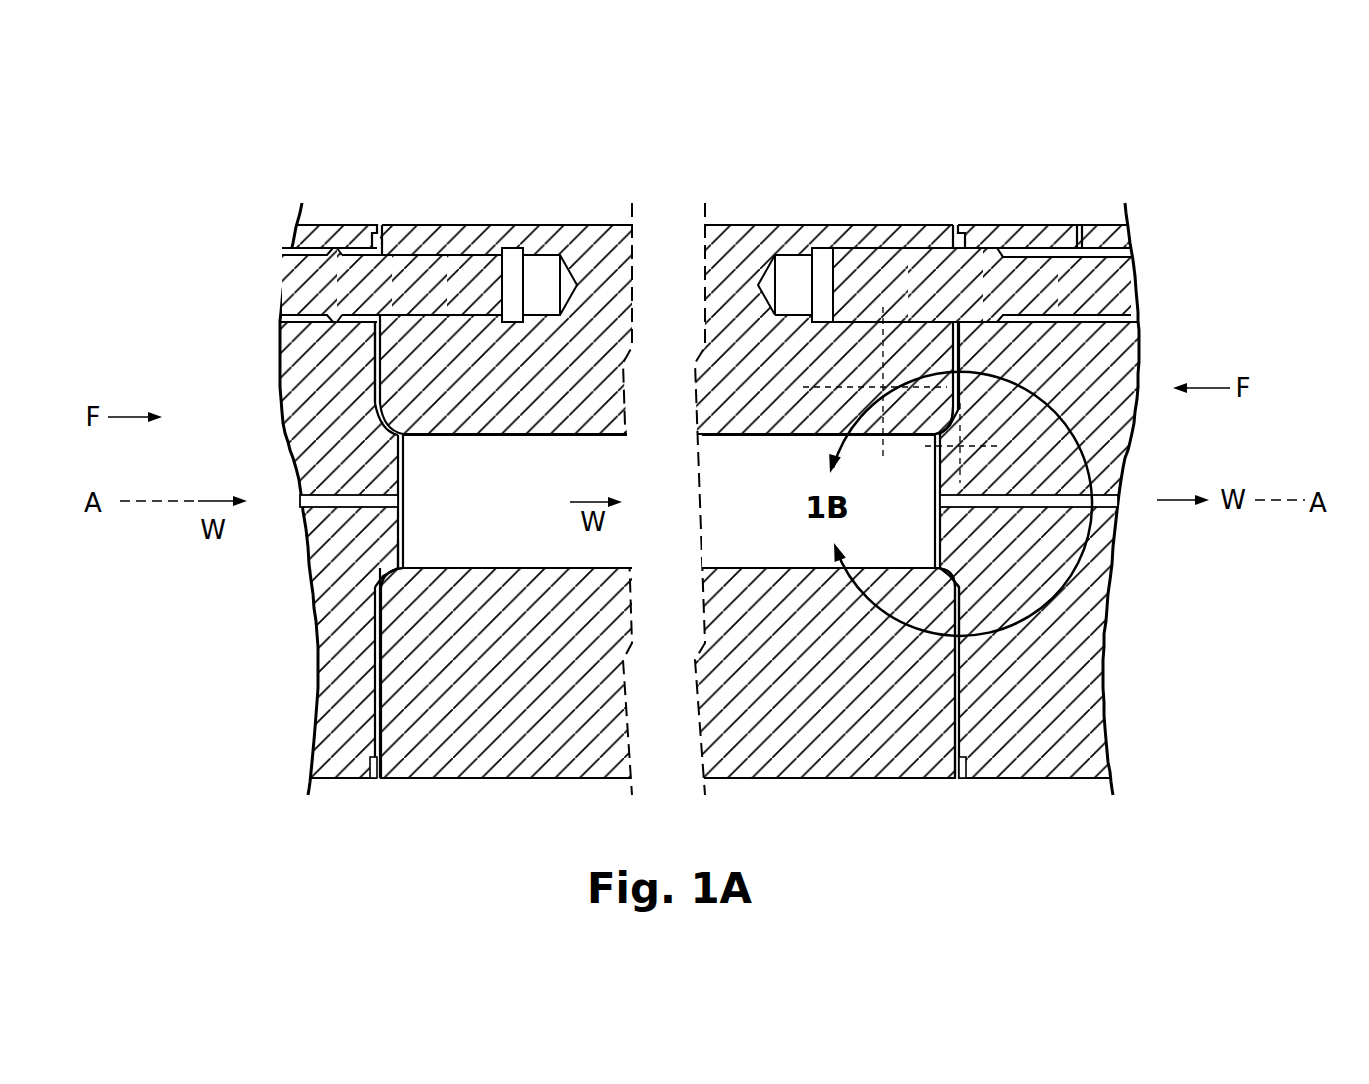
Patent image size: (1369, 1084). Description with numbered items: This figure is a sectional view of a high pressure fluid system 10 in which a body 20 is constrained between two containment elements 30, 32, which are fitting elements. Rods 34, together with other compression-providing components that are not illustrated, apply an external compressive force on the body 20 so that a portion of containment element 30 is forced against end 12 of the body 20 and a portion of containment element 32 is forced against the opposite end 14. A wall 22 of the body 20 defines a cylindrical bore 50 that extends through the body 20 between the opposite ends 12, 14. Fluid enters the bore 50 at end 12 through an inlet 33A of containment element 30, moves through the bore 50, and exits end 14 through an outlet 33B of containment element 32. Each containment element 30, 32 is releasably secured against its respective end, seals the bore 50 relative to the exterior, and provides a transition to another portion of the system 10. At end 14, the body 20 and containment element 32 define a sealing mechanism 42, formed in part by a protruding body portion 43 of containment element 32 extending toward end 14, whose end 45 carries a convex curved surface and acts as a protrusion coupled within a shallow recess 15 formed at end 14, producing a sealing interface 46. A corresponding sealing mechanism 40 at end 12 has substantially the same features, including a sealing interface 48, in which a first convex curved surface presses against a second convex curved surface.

The high pressure fluid system 10 is at (786, 174).
The end of body 12 is at (388, 712).
The end of body 14 is at (940, 705).
The shallow recess 15 is at (390, 597).
The body 20 is at (757, 798).
The wall 22 is at (497, 765).
The containment element 30 is at (338, 770).
The containment element 32 is at (1058, 760).
The inlet 33A is at (322, 510).
The outlet 33B is at (1100, 512).
The rod 34 is at (445, 273).
The sealing mechanism 40 is at (375, 556).
The sealing mechanism 42 is at (990, 567).
The protruding body portion 43 is at (994, 546).
The end of protruding body portion 45 is at (405, 548).
The sealing interface 46 is at (966, 435).
The sealing interface 48 is at (384, 441).
The cylindrical bore 50 is at (508, 506).